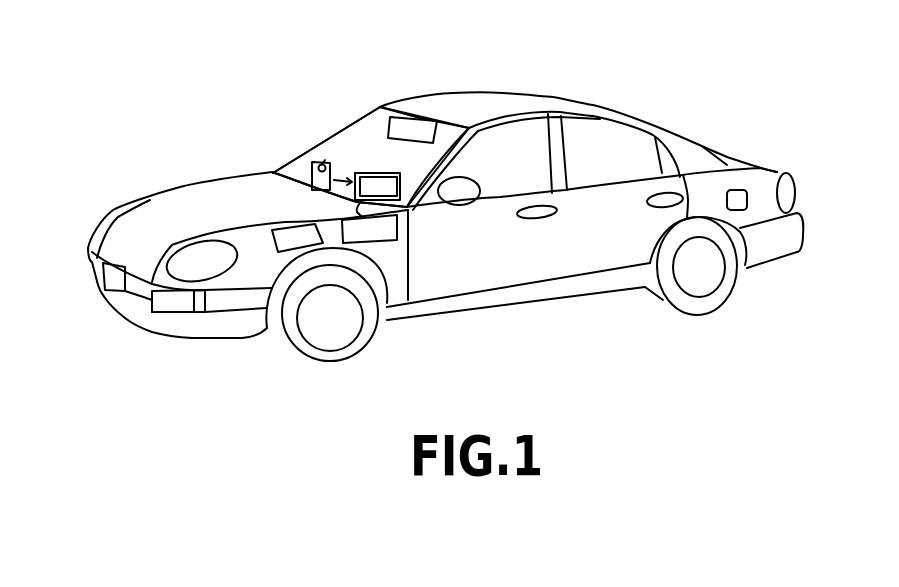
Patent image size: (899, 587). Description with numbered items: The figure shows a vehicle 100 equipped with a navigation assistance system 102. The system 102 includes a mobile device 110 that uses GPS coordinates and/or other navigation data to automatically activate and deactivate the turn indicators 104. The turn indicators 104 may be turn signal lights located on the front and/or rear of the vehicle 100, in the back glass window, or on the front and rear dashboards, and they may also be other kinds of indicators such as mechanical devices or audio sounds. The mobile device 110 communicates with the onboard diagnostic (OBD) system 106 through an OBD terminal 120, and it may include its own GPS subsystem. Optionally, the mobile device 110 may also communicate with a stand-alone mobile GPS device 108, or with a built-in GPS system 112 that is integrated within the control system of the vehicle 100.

The vehicle 100 is at (680, 106).
The navigation assistance system 102 is at (283, 106).
The turn indicators 104 is at (175, 297).
The onboard diagnostic (OBD) system 106 is at (380, 228).
The stand-alone mobile GPS device 108 is at (413, 124).
The mobile device 110 is at (313, 170).
The built-in GPS system 112 is at (300, 237).
The OBD terminal 120 is at (372, 173).